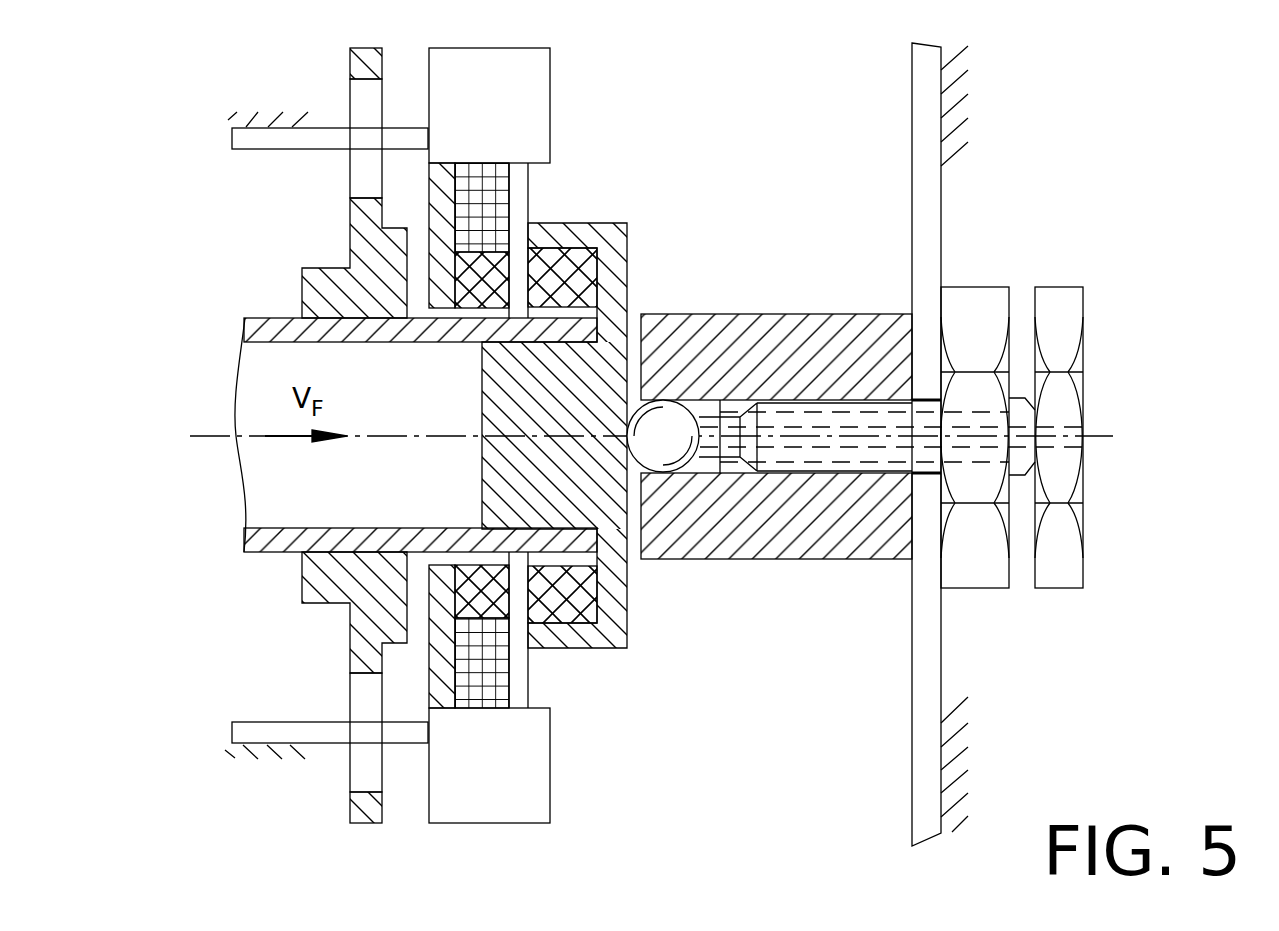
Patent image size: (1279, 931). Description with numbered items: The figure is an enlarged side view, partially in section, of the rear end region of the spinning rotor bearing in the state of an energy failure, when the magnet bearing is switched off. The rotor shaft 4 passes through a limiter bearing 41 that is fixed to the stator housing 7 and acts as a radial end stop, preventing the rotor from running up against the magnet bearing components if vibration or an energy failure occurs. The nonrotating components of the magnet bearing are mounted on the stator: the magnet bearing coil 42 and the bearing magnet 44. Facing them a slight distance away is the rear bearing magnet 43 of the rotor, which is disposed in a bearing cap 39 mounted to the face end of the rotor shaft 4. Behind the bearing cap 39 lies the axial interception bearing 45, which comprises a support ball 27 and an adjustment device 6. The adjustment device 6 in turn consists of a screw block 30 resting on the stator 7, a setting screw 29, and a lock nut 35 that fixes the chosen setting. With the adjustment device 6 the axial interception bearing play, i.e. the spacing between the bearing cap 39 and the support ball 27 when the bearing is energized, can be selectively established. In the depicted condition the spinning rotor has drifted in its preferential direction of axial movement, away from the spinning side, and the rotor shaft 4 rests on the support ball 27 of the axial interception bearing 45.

The rotor shaft 4 is at (260, 324).
The adjustment device 6 is at (1030, 614).
The stator housing 7 is at (528, 110).
The support ball 27 is at (669, 453).
The setting screw 29 is at (1060, 297).
The screw block 30 is at (801, 527).
The lock nut 35 is at (965, 298).
The bearing cap 39 is at (568, 610).
The limiter bearing 41 is at (320, 592).
The magnet bearing coil 42 is at (498, 200).
The rear bearing magnet of the rotor 43 is at (563, 280).
The bearing magnet 44 is at (498, 262).
The axial interception bearing 45 is at (750, 682).